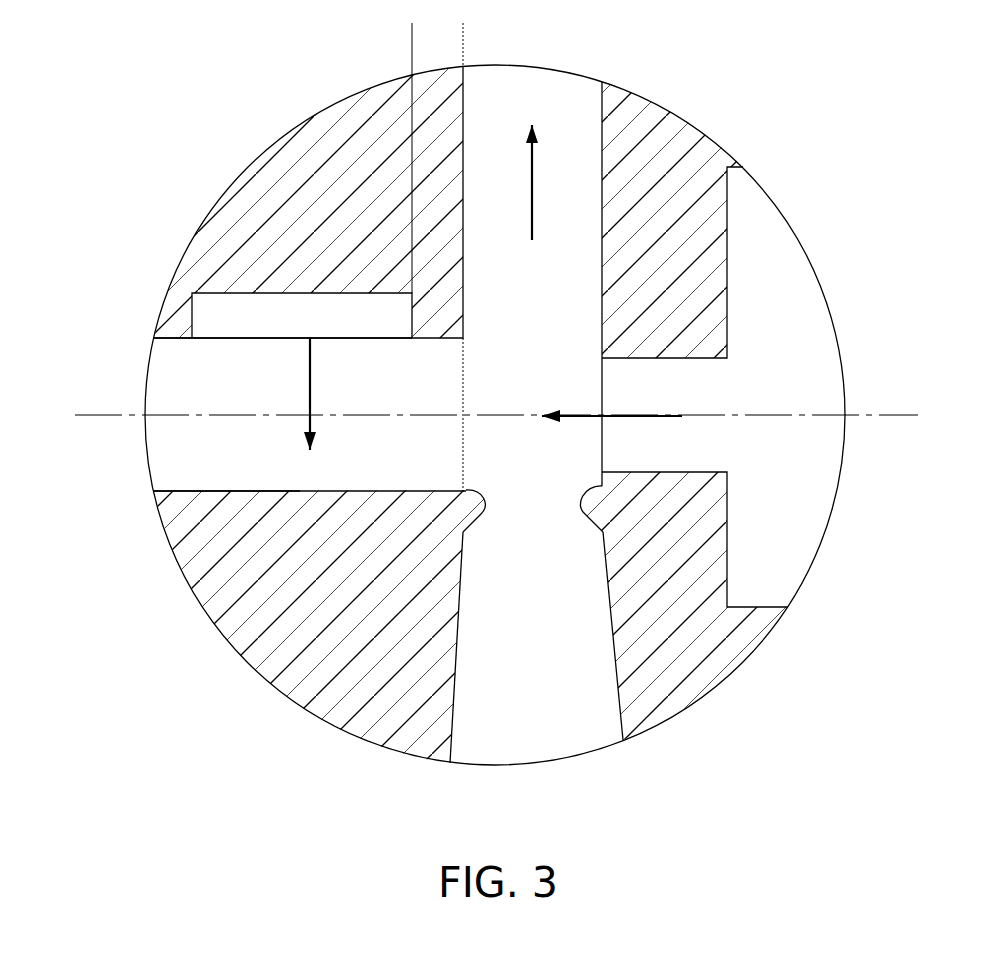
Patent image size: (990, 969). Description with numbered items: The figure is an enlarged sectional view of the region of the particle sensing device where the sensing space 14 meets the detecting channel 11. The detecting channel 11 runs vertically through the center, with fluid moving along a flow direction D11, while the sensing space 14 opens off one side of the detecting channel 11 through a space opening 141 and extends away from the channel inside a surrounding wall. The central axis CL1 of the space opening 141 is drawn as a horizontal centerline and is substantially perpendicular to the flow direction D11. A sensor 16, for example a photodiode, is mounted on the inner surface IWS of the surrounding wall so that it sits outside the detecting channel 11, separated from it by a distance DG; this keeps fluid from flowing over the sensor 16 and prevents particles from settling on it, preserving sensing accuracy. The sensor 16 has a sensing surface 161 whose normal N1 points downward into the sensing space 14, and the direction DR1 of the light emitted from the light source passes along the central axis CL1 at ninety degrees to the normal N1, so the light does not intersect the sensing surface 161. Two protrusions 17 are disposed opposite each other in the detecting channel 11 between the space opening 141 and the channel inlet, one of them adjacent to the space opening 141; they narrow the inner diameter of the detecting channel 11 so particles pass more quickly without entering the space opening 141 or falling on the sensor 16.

The detecting channel 11 is at (540, 703).
The sensing space 14 is at (237, 445).
The space opening 141 is at (464, 377).
The sensor 16 is at (237, 312).
The sensing surface 161 is at (263, 341).
The protrusions 17 is at (472, 503).
The inner surface IWS is at (172, 343).
The normal N1 is at (309, 411).
The flow direction D11 is at (533, 185).
The direction of the light DR1 is at (577, 420).
The distance DG is at (505, 30).
The central axis CL1 is at (525, 416).